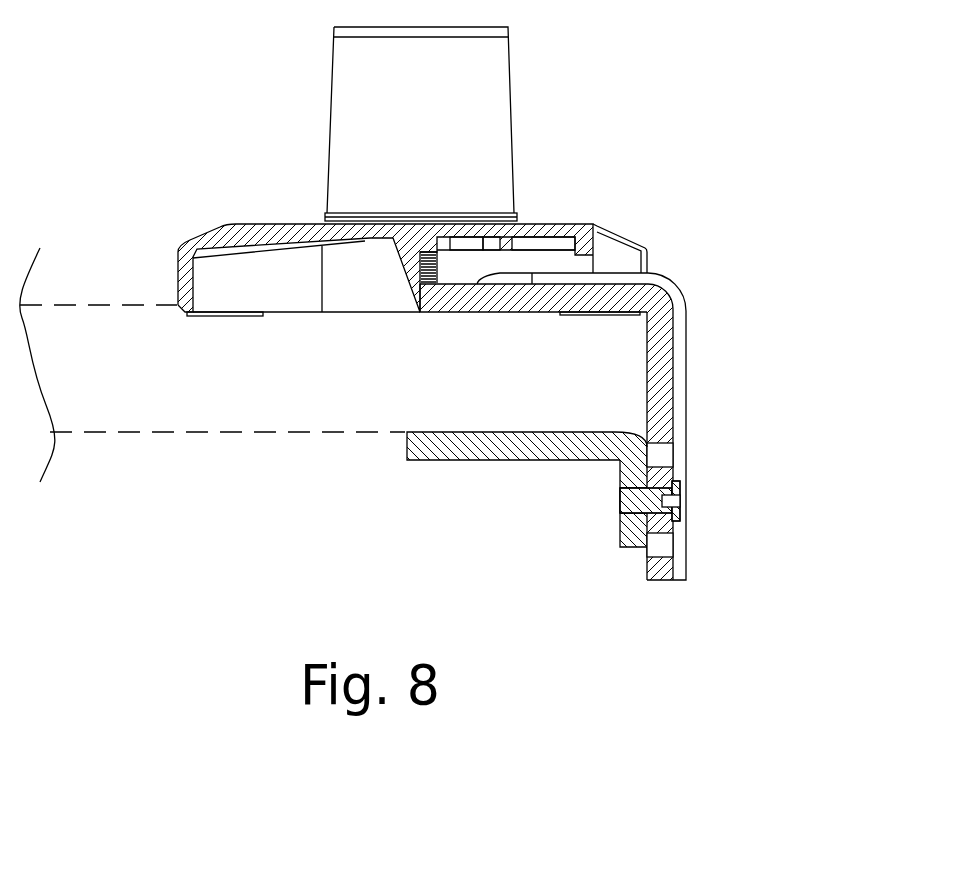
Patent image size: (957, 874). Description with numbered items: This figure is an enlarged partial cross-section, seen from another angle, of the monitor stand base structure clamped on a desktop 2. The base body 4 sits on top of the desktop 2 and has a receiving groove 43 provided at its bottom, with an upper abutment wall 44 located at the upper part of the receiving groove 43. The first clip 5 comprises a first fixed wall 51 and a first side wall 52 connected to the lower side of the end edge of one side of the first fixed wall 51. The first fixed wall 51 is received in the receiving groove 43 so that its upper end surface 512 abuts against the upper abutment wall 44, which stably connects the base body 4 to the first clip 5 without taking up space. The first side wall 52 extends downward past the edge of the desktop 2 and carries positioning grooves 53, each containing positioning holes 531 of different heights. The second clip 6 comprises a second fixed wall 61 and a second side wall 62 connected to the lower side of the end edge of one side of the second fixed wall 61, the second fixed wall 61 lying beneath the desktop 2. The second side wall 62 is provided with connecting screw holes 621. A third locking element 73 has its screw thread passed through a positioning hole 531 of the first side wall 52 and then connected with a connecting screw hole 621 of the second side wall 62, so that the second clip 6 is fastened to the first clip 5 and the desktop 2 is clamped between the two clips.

The desktop 2 is at (78, 299).
The base body 4 is at (430, 171).
The receiving groove 43 is at (537, 262).
The upper abutment wall 44 is at (598, 278).
The first clip 5 is at (613, 406).
The first fixed wall 51 is at (561, 292).
The upper end surface 512 is at (627, 277).
The first side wall 52 is at (688, 323).
The positioning groove 53 is at (726, 432).
The positioning hole 531 is at (667, 460).
The second clip 6 is at (523, 538).
The second fixed wall 61 is at (472, 462).
The second side wall 62 is at (593, 552).
The connecting screw hole 621 is at (631, 514).
The third locking element 73 is at (683, 492).